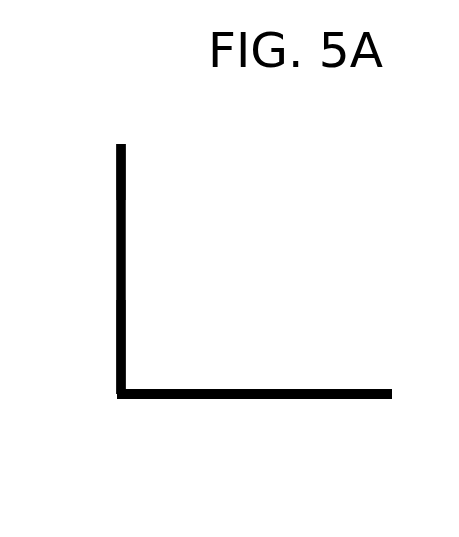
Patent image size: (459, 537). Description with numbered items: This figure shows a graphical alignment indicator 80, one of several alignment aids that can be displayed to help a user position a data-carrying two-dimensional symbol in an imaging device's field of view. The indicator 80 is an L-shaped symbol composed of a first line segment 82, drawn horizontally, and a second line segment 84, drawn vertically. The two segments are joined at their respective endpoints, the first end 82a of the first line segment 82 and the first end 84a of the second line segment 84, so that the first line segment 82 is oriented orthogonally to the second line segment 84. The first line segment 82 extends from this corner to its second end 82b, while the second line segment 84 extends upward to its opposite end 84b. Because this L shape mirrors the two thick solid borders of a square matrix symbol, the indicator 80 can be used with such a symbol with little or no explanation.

The first graphical alignment indicator 80 is at (270, 280).
The first line segment 82 is at (273, 389).
The first end of first line segment 82a is at (150, 399).
The second end of first line segment 82b is at (377, 399).
The second line segment 84 is at (125, 284).
The first end of second line segment 84a is at (116, 350).
The upper portion of vertical panel 84b is at (116, 173).